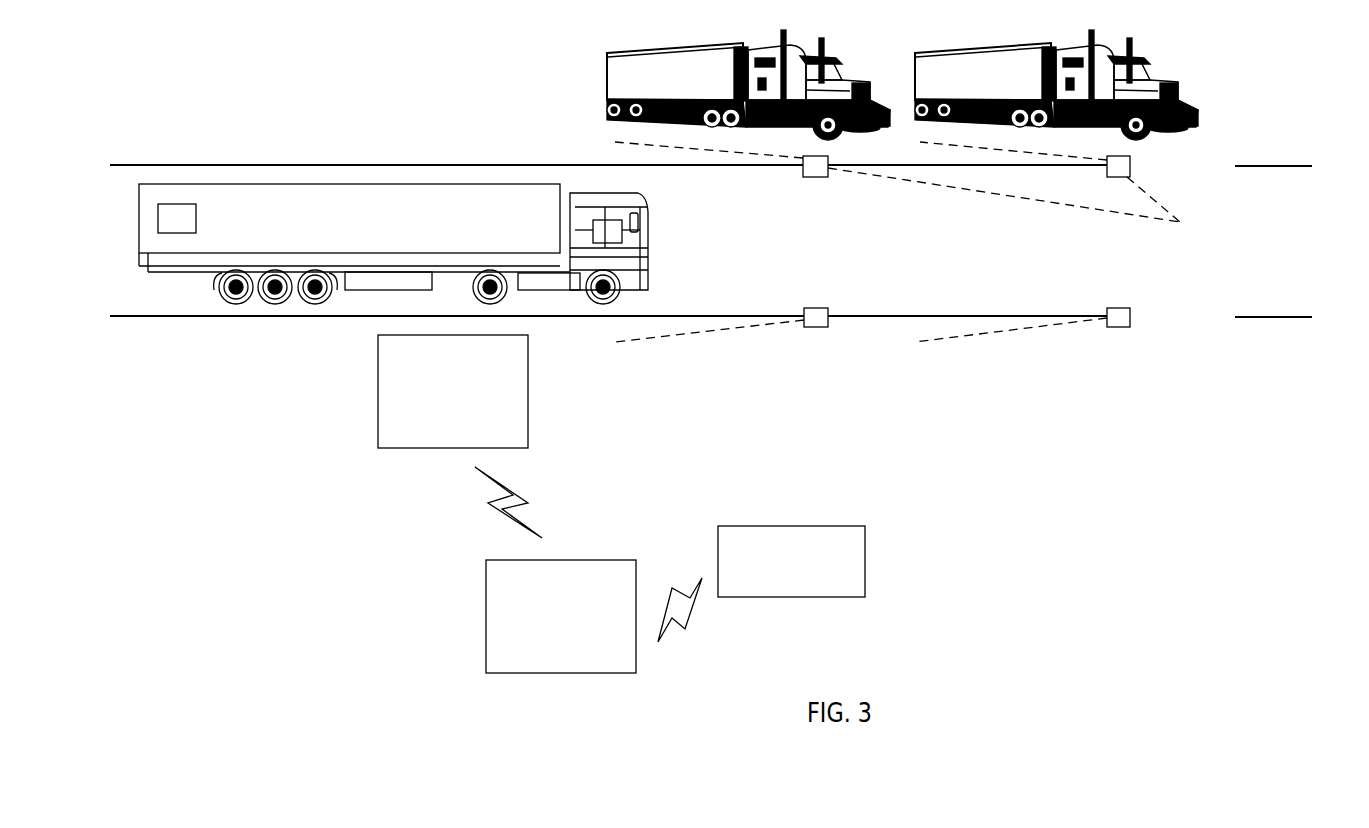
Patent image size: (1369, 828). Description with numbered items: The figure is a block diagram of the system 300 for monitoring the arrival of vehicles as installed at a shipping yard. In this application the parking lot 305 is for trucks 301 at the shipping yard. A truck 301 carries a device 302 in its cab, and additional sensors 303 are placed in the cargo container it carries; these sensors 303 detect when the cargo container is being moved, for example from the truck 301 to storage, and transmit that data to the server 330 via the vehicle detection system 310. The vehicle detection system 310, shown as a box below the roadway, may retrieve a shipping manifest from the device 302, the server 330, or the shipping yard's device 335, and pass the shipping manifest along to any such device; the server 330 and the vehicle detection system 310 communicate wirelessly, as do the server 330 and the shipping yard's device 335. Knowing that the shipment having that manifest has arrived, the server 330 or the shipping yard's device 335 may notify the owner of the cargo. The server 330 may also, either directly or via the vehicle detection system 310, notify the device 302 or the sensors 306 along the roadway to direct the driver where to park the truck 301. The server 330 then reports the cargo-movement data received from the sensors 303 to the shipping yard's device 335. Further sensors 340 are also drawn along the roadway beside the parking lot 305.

The system 300 is at (272, 507).
The truck 301 is at (123, 219).
The device 302 is at (600, 222).
The sensors 303 is at (177, 202).
The parking lot 305 is at (1262, 78).
The sensors 306 is at (862, 334).
The vehicle detection system 310 is at (375, 393).
The server 330 is at (485, 615).
The shipping yard's device 335 is at (865, 560).
The upper sensors 340 is at (919, 192).